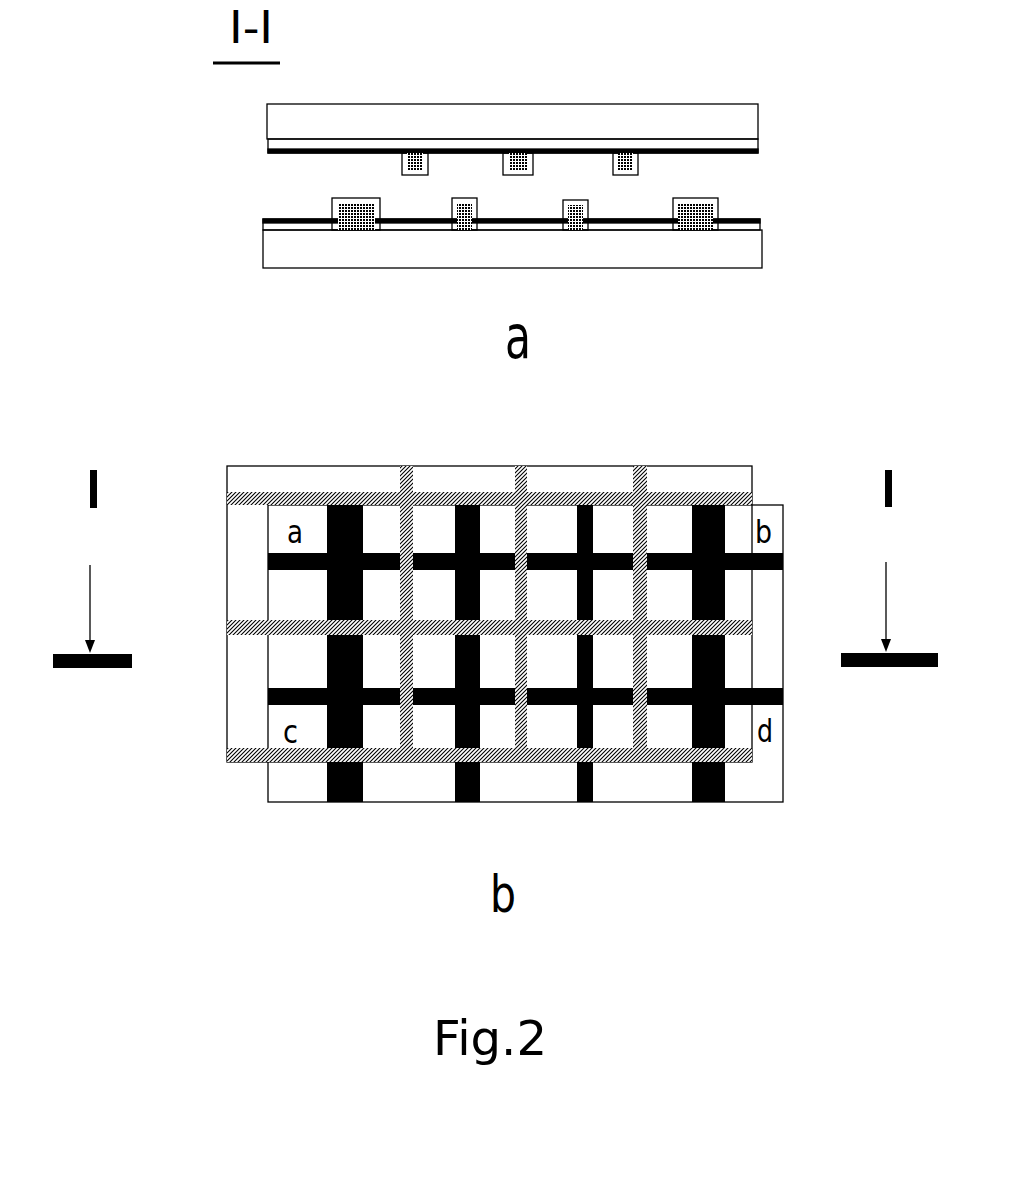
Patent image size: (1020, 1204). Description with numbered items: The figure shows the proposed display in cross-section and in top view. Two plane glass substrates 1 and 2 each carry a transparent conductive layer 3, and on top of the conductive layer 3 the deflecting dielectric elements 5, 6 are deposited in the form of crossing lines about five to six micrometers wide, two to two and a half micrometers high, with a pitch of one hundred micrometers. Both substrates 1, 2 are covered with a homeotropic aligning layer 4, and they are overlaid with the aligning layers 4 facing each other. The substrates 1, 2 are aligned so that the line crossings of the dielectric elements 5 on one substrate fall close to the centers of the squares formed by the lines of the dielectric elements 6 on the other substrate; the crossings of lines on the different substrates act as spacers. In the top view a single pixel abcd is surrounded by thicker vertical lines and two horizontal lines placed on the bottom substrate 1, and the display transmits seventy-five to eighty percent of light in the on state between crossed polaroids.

The glass substrate 1 is at (277, 250).
The glass substrate 2 is at (283, 127).
The conductive layer 3 is at (752, 147).
The homeotropic aligning layer 4 is at (290, 153).
The deflecting dielectric element 5 is at (700, 221).
The deflecting dielectric element 6 is at (424, 152).